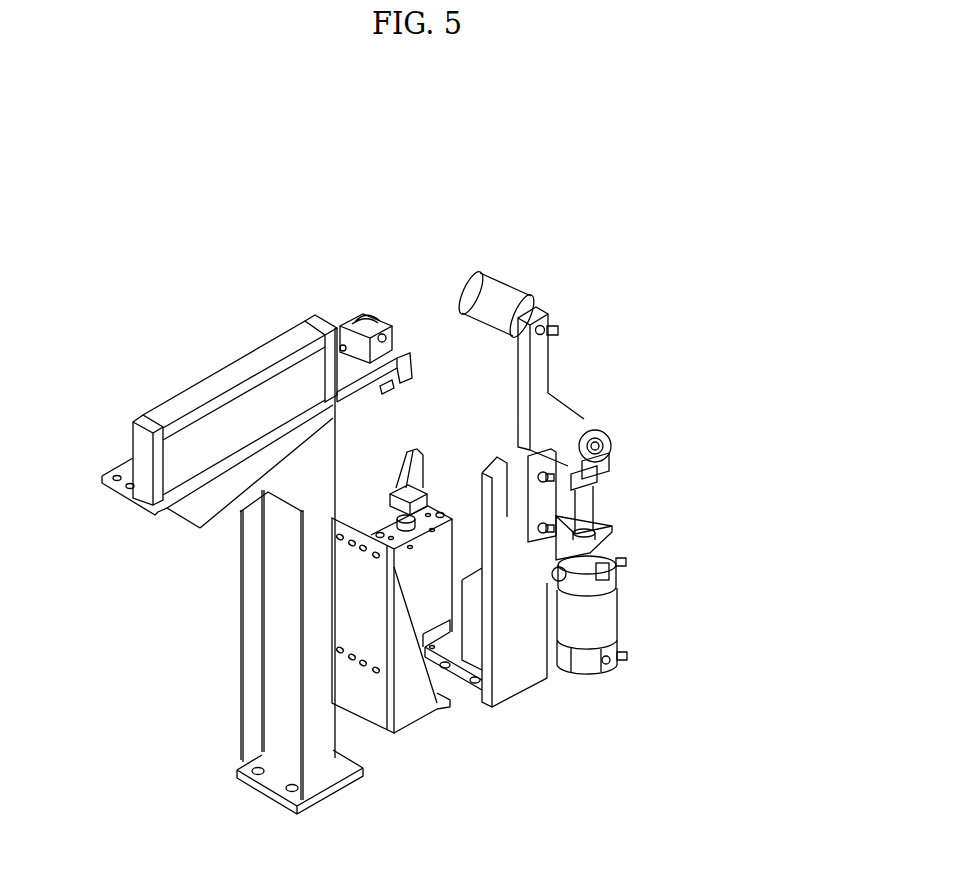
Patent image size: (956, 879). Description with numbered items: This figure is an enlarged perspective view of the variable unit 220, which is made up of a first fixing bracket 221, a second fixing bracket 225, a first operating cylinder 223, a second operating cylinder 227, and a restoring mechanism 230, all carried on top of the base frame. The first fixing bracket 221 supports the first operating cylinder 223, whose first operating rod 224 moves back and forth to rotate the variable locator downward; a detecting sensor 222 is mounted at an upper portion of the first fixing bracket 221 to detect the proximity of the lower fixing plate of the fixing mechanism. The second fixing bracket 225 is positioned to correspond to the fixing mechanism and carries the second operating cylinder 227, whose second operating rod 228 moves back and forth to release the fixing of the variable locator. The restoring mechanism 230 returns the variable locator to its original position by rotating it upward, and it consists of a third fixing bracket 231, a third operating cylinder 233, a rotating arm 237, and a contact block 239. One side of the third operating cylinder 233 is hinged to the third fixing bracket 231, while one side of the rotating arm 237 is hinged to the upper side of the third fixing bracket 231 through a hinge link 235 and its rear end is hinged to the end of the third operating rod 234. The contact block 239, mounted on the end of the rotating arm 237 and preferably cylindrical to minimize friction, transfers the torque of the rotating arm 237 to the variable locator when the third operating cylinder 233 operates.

The variable unit 220 is at (295, 246).
The first fixing bracket 221 is at (323, 607).
The detecting sensor 222 is at (395, 390).
The first operating cylinder 223 is at (180, 453).
The first operating rod 224 is at (337, 322).
The second fixing bracket 225 is at (410, 700).
The second operating cylinder 227 is at (428, 620).
The second operating rod 228 is at (392, 528).
The restoring mechanism 230 is at (583, 404).
The third fixing bracket 231 is at (512, 662).
The third operating cylinder 233 is at (600, 623).
The third operating rod 234 is at (588, 515).
The hinge link 235 is at (543, 500).
The rotating arm 237 is at (572, 437).
The contact block 239 is at (500, 296).